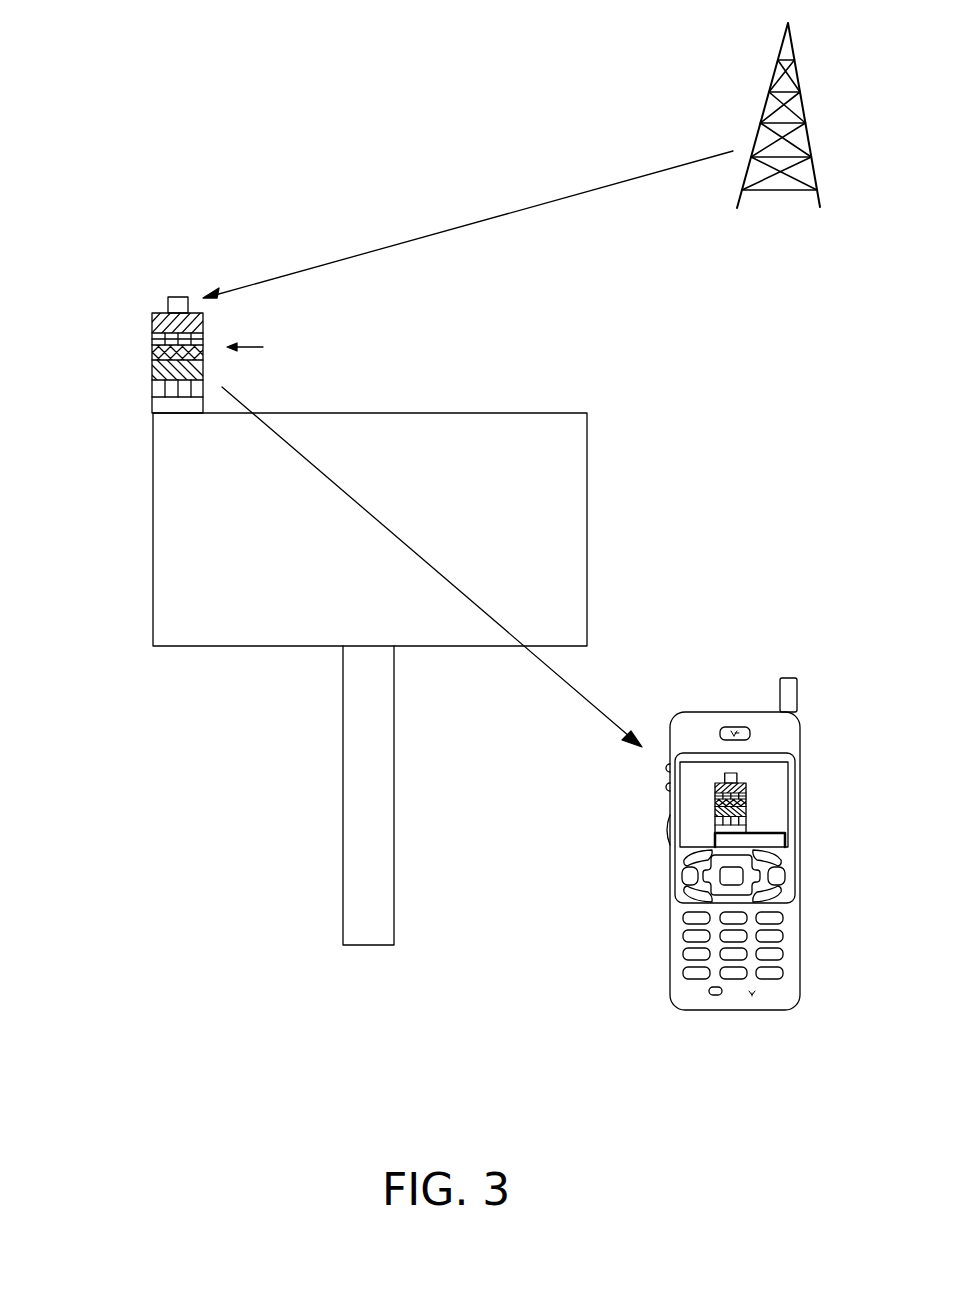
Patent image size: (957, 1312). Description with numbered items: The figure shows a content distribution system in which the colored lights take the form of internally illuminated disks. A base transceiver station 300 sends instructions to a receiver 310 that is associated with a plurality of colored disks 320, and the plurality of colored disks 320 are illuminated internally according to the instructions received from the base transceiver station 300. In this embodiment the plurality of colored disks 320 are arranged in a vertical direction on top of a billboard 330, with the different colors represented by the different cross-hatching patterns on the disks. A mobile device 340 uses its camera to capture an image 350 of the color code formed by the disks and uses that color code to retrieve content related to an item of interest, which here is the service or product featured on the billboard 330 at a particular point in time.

The base transceiver station 300 is at (795, 57).
The receiver 310 is at (168, 307).
The plurality of colored disks 320 is at (273, 350).
The billboard 330 is at (410, 413).
The mobile device 340 is at (770, 829).
The image 350 is at (778, 812).